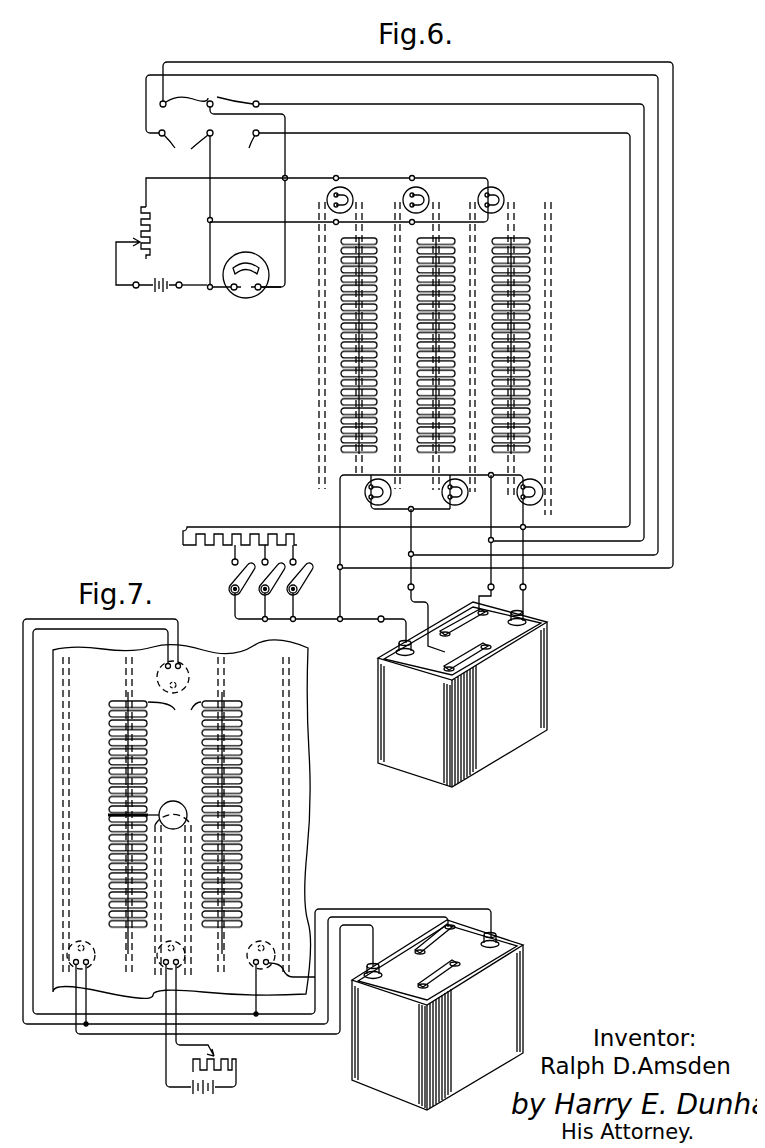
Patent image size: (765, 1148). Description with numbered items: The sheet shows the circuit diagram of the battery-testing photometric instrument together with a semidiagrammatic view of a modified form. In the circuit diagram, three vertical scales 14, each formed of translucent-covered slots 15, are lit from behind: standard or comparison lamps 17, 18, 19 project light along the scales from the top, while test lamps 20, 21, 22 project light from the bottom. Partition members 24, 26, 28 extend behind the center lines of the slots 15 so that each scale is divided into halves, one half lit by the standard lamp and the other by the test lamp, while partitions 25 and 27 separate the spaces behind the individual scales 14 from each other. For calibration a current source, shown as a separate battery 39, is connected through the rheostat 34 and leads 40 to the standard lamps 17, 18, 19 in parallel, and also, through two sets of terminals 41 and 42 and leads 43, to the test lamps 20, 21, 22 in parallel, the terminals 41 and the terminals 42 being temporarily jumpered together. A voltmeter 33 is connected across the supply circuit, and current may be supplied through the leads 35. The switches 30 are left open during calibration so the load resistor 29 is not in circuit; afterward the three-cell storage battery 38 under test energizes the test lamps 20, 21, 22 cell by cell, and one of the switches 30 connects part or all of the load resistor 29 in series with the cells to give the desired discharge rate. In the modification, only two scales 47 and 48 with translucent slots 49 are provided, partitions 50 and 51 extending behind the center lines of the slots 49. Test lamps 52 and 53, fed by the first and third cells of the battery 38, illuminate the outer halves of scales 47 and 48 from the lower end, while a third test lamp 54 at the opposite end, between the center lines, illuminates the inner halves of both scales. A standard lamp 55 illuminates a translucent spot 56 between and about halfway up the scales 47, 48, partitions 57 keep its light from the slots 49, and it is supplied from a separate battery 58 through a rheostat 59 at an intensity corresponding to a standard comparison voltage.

In FIG. 6, the scales 14 is at (413, 240).
In FIG. 6, the slots 15 is at (375, 448).
In FIG. 6, the standard lamp 17 is at (346, 190).
In FIG. 6, the standard lamp 18 is at (422, 190).
In FIG. 6, the standard lamp 19 is at (497, 190).
In FIG. 6, the test lamp 20 is at (388, 494).
In FIG. 6, the test lamp 21 is at (462, 493).
In FIG. 6, the test lamp 22 is at (515, 492).
In FIG. 6, the partition member 24 is at (368, 394).
In FIG. 6, the partition member 25 is at (398, 400).
In FIG. 6, the partition member 26 is at (446, 394).
In FIG. 6, the partition member 27 is at (474, 400).
In FIG. 6, the partition member 28 is at (515, 380).
In FIG. 6, the load resistor 29 is at (200, 546).
In FIG. 6, the switches 30 is at (251, 585).
In FIG. 6, the voltmeter 33 is at (252, 290).
In FIG. 6, the rheostat 34 is at (133, 229).
In FIG. 6, the leads 35 is at (192, 282).
In FIG. 6, the storage battery 38 is at (462, 694).
In FIG. 7, the storage battery 38 is at (437, 1015).
In FIG. 6, the battery 39 is at (165, 289).
In FIG. 6, the leads 40 is at (203, 233).
In FIG. 6, the terminals 41 is at (209, 94).
In FIG. 6, the terminals 42 is at (209, 146).
In FIG. 6, the leads 43 is at (572, 127).
In FIG. 7, the scale 47 is at (116, 698).
In FIG. 7, the scale 48 is at (230, 698).
In FIG. 7, the slots 49 is at (174, 711).
In FIG. 7, the partition 50 is at (140, 790).
In FIG. 7, the partition 51 is at (230, 829).
In FIG. 7, the test lamp 52 is at (86, 962).
In FIG. 7, the test lamp 53 is at (248, 964).
In FIG. 7, the test lamp 54 is at (180, 660).
In FIG. 7, the standard lamp 55 is at (158, 968).
In FIG. 7, the spot 56 is at (105, 813).
In FIG. 7, the partitions 57 is at (183, 912).
In FIG. 7, the battery 58 is at (190, 1094).
In FIG. 7, the rheostat 59 is at (234, 1060).